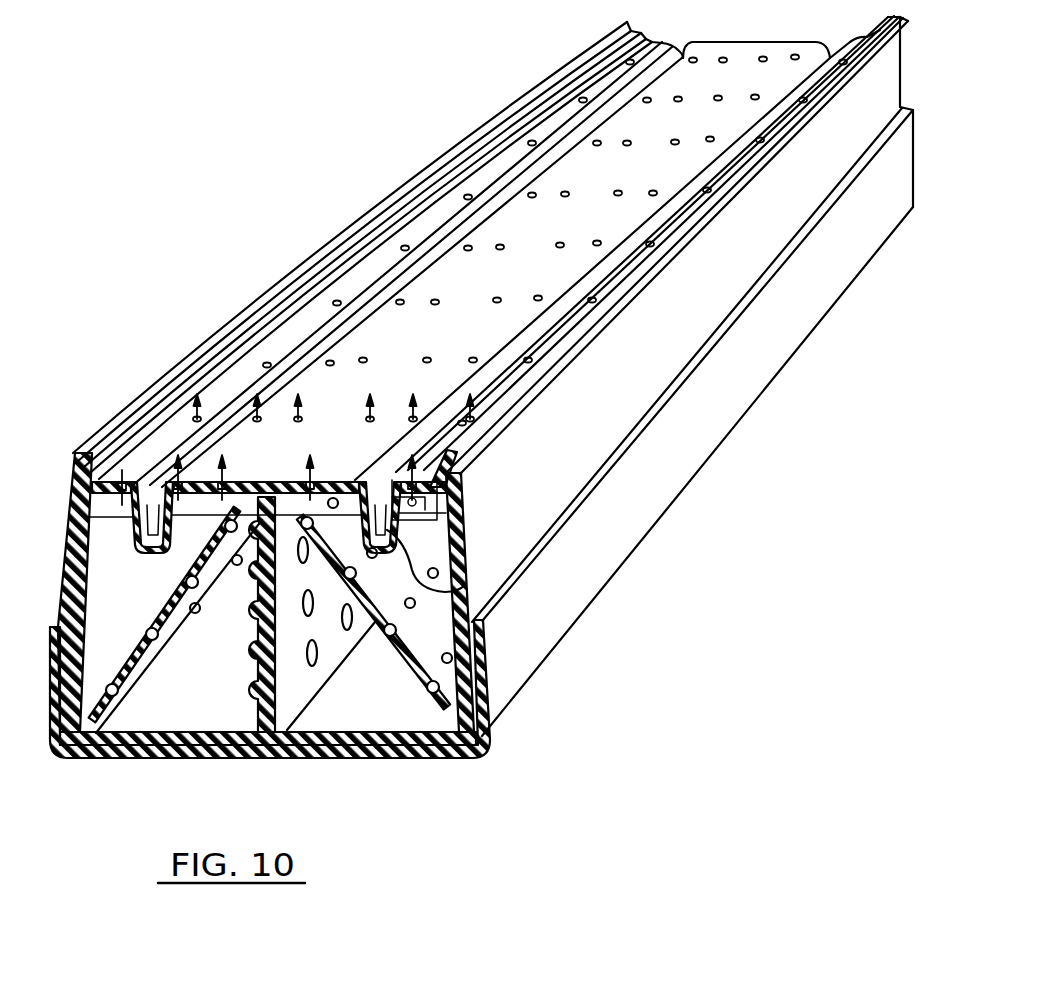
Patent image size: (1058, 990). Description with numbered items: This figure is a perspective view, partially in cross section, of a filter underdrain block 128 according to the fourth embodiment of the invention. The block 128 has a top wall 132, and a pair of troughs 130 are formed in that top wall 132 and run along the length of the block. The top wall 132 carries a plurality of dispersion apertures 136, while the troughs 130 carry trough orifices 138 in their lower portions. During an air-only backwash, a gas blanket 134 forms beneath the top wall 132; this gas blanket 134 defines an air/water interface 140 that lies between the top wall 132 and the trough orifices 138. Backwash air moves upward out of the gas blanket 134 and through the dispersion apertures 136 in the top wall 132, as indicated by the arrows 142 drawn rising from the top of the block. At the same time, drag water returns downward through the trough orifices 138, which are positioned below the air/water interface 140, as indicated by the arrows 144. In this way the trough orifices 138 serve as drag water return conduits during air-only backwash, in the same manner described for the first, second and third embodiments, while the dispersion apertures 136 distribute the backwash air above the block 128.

The block 128 is at (156, 342).
The troughs 130 is at (377, 300).
The top wall 132 is at (584, 176).
The gas blanket 134 is at (440, 510).
The dispersion apertures 136 is at (416, 416).
The trough orifices 138 is at (463, 483).
The air/water interface 140 is at (107, 448).
The arrows 142 is at (305, 462).
The arrows 144 is at (132, 534).